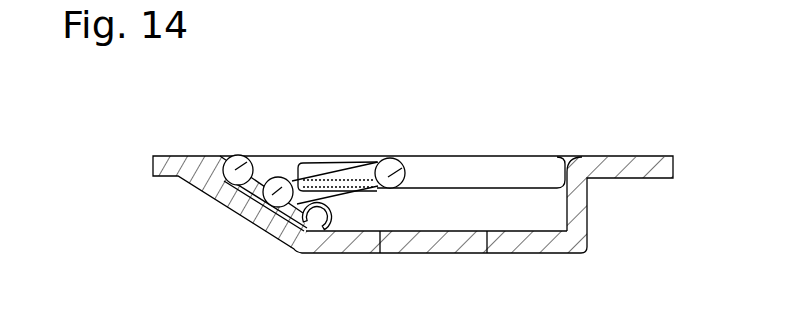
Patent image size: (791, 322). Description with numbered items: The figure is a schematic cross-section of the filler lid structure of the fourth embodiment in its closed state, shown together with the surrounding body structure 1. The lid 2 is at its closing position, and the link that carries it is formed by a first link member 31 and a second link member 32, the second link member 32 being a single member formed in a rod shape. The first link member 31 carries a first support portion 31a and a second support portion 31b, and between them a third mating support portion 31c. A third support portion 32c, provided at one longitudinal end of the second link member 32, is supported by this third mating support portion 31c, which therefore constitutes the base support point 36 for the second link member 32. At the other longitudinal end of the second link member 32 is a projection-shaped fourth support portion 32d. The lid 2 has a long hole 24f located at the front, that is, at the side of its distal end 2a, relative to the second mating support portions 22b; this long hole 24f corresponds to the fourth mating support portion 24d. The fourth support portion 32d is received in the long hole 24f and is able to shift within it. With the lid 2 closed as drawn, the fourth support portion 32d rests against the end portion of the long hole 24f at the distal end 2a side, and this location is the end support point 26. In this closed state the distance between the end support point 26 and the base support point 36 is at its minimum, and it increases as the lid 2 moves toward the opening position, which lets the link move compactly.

The housing 1 is at (414, 185).
The lid 2 is at (517, 165).
The distal end 2a is at (566, 163).
The second mating support portion 22b is at (254, 156).
The fourth mating support portion 24d is at (328, 167).
The long hole 24f is at (307, 163).
The end support point 26 is at (386, 159).
The first link member 31 is at (243, 185).
The first support portion 31a is at (291, 222).
The second support portion 31b is at (229, 161).
The third mating support portion 31c is at (285, 176).
The second link member 32 is at (342, 188).
The third support portion 32c is at (283, 208).
The fourth support portion 32d is at (405, 167).
The base support point 36 is at (292, 179).